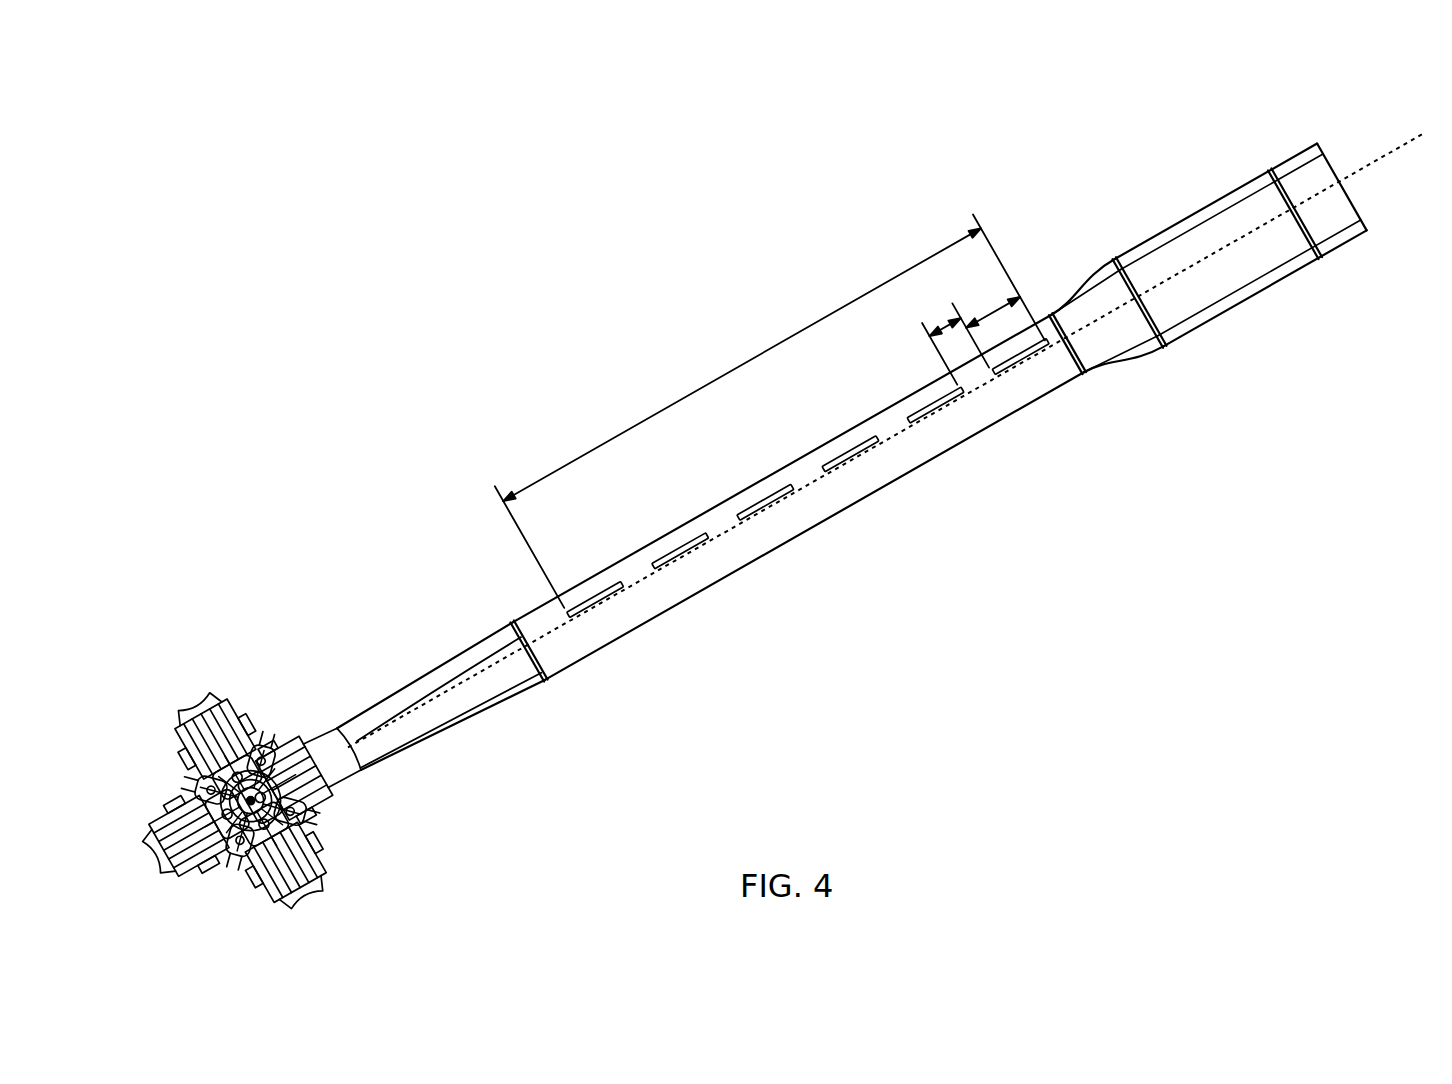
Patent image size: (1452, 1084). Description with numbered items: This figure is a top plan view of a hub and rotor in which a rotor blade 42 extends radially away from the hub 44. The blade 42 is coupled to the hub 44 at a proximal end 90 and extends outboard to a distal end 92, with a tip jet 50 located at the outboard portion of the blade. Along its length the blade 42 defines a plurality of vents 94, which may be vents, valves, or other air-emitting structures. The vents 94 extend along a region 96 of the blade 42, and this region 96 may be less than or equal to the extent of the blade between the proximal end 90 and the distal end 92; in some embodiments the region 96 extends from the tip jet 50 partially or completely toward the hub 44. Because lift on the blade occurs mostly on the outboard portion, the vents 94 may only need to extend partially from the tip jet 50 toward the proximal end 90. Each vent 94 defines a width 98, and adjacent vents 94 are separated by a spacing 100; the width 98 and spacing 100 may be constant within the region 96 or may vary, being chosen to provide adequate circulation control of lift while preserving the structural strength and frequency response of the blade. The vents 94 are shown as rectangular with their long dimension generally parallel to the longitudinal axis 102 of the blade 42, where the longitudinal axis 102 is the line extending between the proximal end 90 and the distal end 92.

The rotor blade 42 is at (822, 512).
The hub 44 is at (308, 746).
The tip jet 50 is at (1222, 238).
The proximal end 90 is at (350, 706).
The distal end 92 is at (1047, 284).
The vents 94 is at (853, 457).
The region 96 is at (739, 367).
The width 98 is at (971, 325).
The spacing 100 is at (946, 325).
The longitudinal axis 102 is at (730, 529).